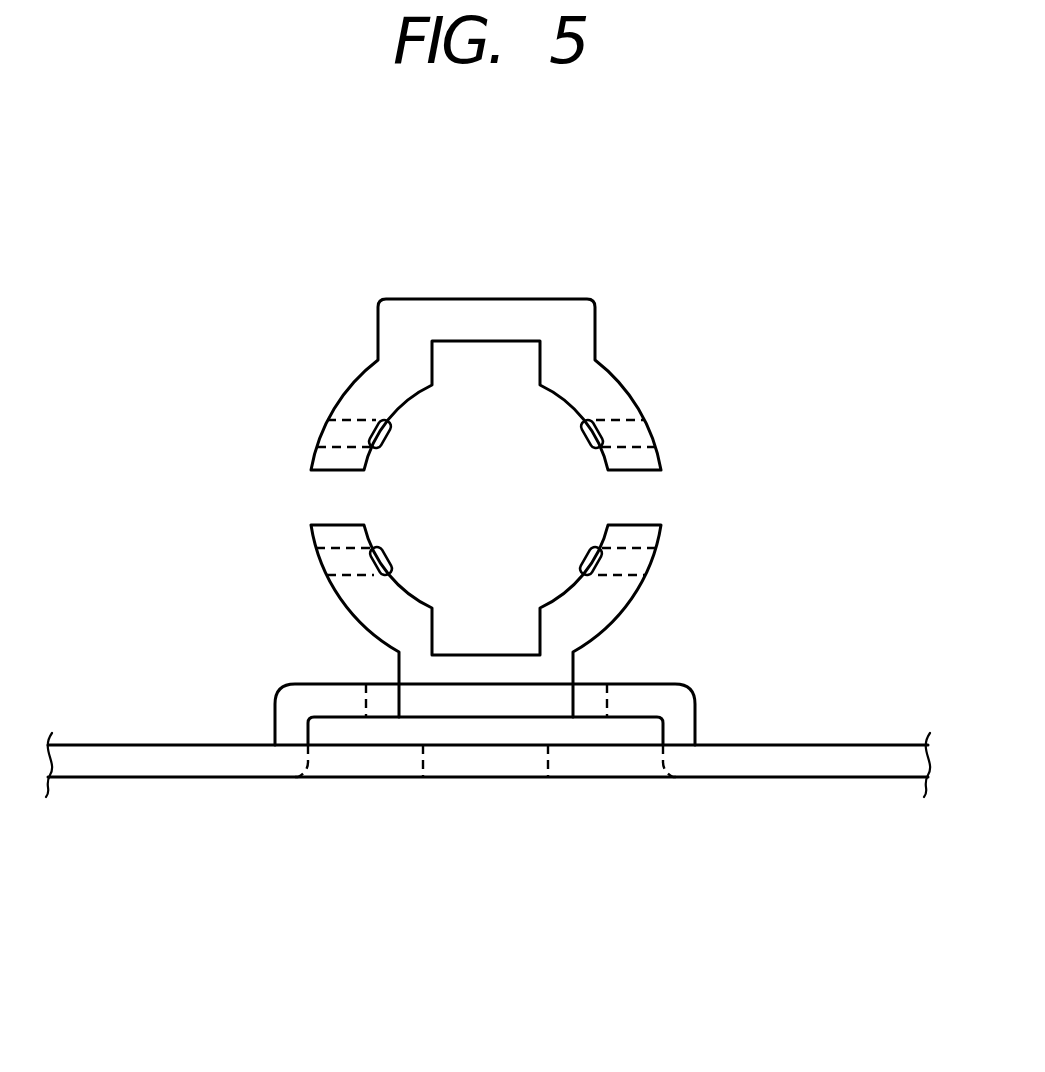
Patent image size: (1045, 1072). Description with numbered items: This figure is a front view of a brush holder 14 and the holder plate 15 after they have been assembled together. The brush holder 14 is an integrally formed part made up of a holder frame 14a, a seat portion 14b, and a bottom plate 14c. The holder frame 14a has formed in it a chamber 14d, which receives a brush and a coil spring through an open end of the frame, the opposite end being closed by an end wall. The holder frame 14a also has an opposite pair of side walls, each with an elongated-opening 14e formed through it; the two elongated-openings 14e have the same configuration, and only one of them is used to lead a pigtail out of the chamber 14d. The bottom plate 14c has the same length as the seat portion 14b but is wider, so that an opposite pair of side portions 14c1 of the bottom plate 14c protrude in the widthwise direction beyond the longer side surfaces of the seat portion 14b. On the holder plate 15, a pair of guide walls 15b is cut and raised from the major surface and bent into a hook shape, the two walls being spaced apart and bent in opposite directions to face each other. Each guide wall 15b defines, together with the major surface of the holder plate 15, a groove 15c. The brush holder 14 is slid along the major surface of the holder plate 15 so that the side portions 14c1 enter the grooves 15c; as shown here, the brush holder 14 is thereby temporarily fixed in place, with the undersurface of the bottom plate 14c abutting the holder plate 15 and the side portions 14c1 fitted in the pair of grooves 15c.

The brush holder 14 is at (576, 266).
The holder frame 14a is at (605, 393).
The seat portion 14b is at (507, 700).
The bottom plate 14c is at (413, 728).
The side portions 14c1 is at (343, 728).
The chamber 14d is at (515, 517).
The elongated-opening 14e is at (640, 500).
The holder plate 15 is at (870, 762).
The guide walls 15b is at (665, 697).
The groove 15c is at (630, 728).